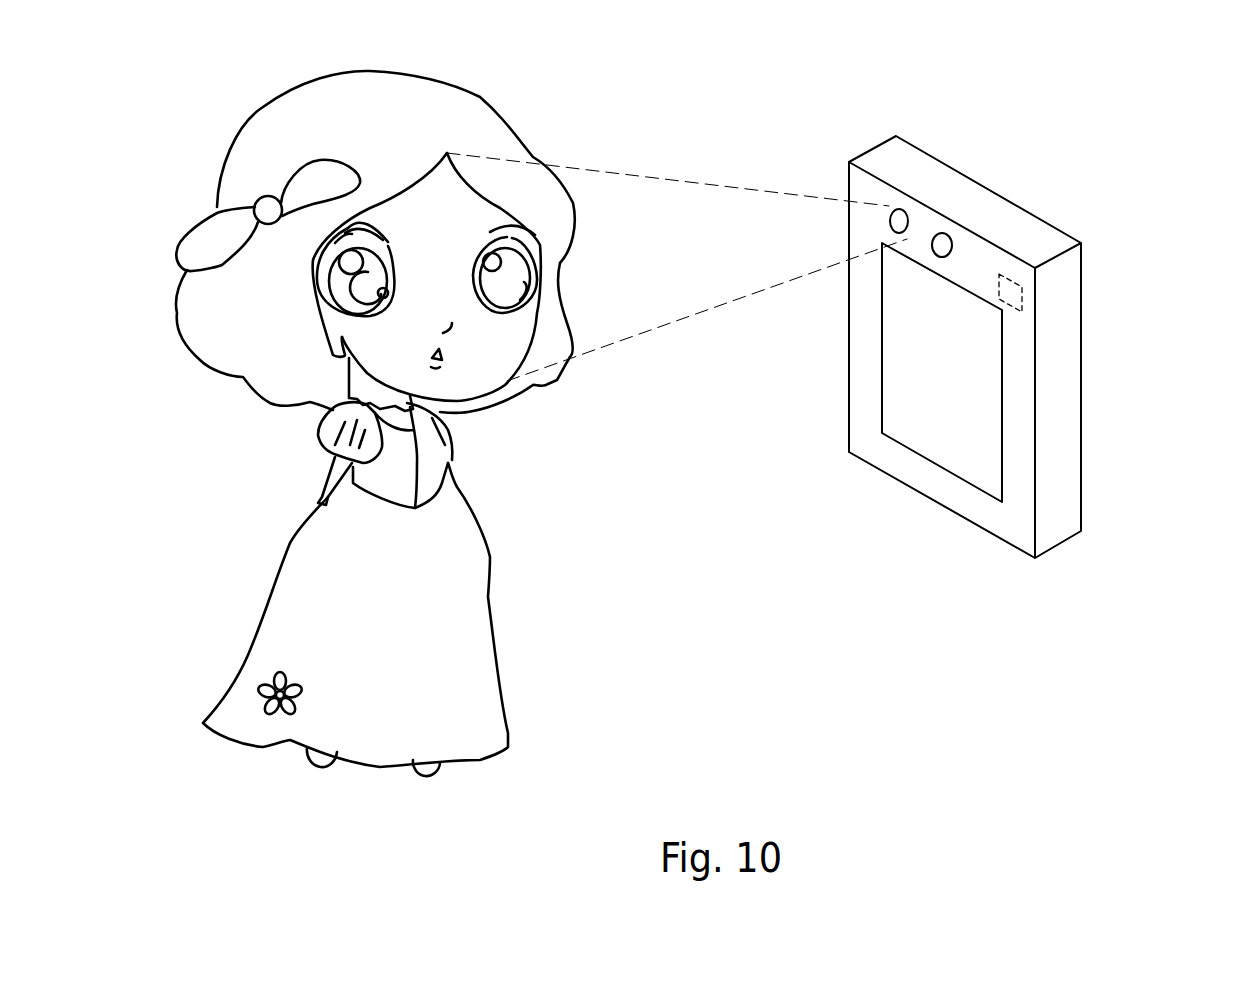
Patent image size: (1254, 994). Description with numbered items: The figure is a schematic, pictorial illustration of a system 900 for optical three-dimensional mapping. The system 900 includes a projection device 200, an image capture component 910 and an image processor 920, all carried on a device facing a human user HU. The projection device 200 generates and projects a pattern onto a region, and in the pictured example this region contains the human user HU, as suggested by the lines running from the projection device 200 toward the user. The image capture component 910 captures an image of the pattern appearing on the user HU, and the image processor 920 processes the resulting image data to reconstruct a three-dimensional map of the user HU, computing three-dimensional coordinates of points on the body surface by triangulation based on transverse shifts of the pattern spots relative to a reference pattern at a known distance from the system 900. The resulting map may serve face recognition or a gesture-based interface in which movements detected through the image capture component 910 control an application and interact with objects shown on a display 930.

The human user HU is at (292, 127).
The system for optical 3D mapping 900 is at (1124, 200).
The projection device 200 is at (897, 209).
The image capture component 910 is at (941, 234).
The image processor 920 is at (1029, 295).
The display 930 is at (983, 416).